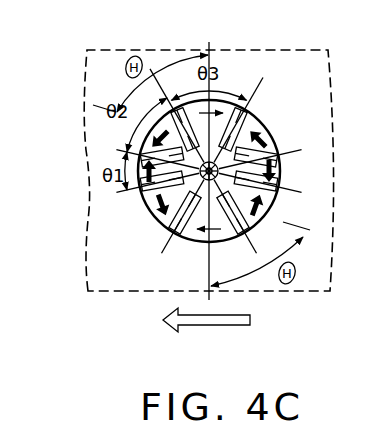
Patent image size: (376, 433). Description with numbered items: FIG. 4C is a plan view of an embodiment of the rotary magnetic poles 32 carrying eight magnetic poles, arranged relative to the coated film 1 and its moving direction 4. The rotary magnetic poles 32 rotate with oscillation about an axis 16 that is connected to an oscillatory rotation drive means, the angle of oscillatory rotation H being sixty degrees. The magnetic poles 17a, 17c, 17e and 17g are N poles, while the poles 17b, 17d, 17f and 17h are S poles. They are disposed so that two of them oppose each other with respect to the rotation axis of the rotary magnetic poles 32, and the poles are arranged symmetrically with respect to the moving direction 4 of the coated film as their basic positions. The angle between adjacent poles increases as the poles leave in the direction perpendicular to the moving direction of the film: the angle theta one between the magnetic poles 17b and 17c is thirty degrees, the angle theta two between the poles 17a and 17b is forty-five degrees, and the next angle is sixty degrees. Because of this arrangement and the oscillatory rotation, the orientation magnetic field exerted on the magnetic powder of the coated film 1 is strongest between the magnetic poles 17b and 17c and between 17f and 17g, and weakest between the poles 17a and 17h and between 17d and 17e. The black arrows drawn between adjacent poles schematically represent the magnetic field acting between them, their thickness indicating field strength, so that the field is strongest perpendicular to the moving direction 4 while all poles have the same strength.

The coated film 1 is at (305, 62).
The moving direction 4 is at (209, 328).
The axis 16 is at (202, 174).
The magnetic pole 17a is at (192, 112).
The magnetic pole 17b is at (150, 130).
The magnetic pole 17c is at (144, 190).
The magnetic pole 17d is at (182, 230).
The magnetic pole 17e is at (234, 222).
The magnetic pole 17f is at (280, 191).
The magnetic pole 17g is at (270, 150).
The magnetic pole 17h is at (231, 112).
The rotary magnetic poles 32 is at (270, 137).